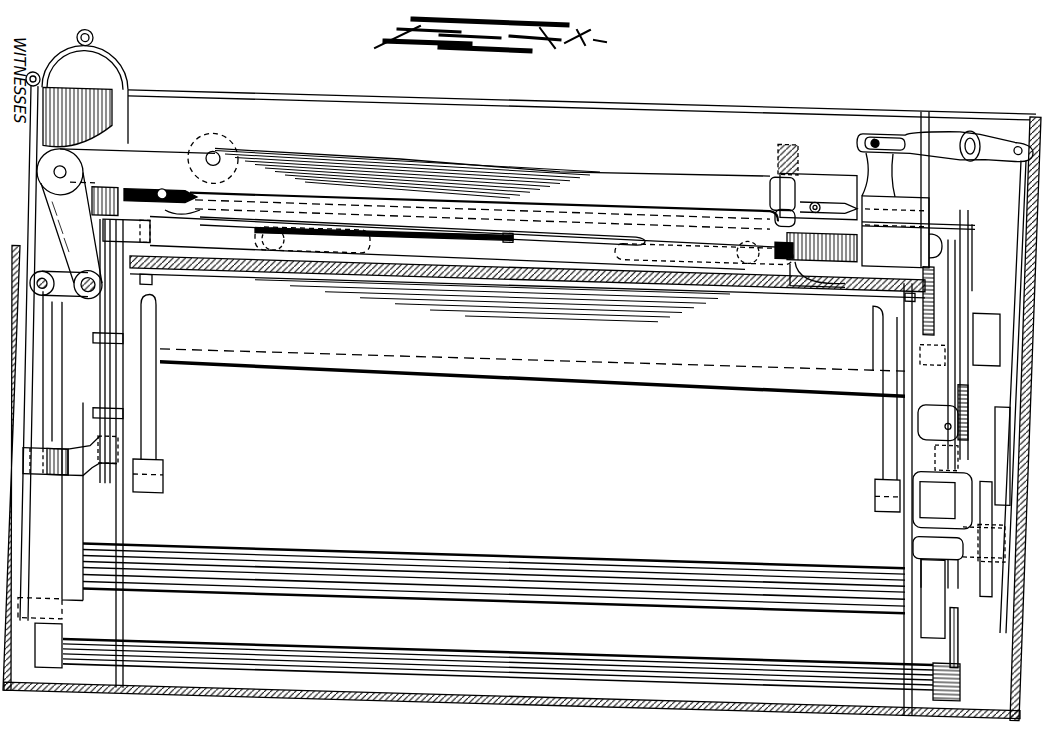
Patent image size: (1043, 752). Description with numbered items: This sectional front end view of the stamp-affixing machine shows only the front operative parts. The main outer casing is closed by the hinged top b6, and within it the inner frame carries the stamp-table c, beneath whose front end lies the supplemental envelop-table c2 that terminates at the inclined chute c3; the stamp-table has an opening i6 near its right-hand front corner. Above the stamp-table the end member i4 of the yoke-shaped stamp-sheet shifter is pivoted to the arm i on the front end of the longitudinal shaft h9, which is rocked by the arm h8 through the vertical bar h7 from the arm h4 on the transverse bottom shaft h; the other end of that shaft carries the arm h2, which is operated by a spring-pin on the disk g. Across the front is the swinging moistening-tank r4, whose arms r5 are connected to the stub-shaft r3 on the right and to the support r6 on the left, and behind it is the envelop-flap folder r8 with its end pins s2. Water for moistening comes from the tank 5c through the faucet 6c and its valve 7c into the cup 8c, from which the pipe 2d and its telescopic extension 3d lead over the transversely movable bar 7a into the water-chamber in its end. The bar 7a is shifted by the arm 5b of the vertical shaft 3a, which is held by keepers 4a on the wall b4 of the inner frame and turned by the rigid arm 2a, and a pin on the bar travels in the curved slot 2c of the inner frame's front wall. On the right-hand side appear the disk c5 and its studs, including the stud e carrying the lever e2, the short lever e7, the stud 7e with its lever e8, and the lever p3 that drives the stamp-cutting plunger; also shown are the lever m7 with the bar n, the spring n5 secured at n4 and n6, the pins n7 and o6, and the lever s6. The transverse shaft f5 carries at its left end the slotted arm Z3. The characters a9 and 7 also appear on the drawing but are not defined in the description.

The top of main outer casing b6 is at (498, 86).
The water can or tank 5c is at (130, 76).
The arm h8 is at (33, 72).
The arm i is at (126, 217).
The shaft h9 is at (82, 290).
The tap or valve 7c is at (207, 146).
The faucet 6c is at (150, 184).
The arm 5b is at (815, 290).
The cup, pan, or receptacle 8c is at (470, 244).
The end member of stamp-sheet shifter i4 is at (20, 175).
The pipe or tube 2d is at (345, 210).
The telescopic extension 3d is at (562, 200).
The chute c3 is at (712, 200).
The stamp-table c is at (712, 208).
The transverse bar 7a is at (524, 246).
The rack bar a9 is at (238, 266).
The pins s2 is at (152, 280).
The envelop-flap folder r8 is at (625, 338).
The curved slot 2c is at (778, 238).
The supplemental envelop-table c2 is at (828, 260).
The opening i6 is at (798, 142).
The arm h4 is at (434, 425).
The pin 7 is at (826, 188).
The lever e8 is at (926, 190).
The pin o6 is at (965, 196).
The short lever e7 is at (918, 222).
The pin n7 is at (955, 257).
The bar n is at (956, 286).
The lever s6 is at (935, 346).
The spring n5 is at (986, 339).
The spring attachment point n4 is at (967, 360).
The lever e2 is at (1002, 377).
The lever m7 is at (938, 423).
The stud e is at (942, 435).
The spring attachment point n6 is at (958, 426).
The stub-shaft r3 is at (942, 500).
The arms r5 is at (883, 416).
The support r6 is at (138, 488).
The lever p3 is at (904, 520).
The stud 7e is at (938, 562).
The disk or wheel c5 is at (985, 567).
The disk g is at (935, 611).
The arm h2 is at (960, 653).
The moistening-tank r4 is at (532, 389).
The shaft f5 is at (494, 568).
The shaft h is at (498, 656).
The left-hand plate or wall of inner frame b4 is at (124, 610).
The arm Z3 is at (72, 510).
The rigid arm 2a is at (105, 466).
The vertical shaft 3a is at (96, 395).
The keepers 4a is at (93, 333).
The vertically-arranged bar h7 is at (40, 376).